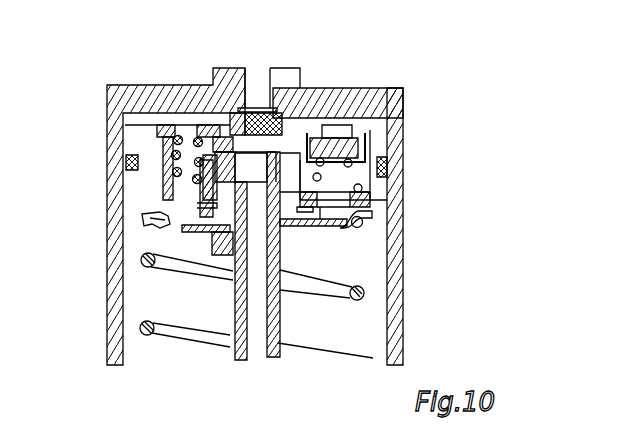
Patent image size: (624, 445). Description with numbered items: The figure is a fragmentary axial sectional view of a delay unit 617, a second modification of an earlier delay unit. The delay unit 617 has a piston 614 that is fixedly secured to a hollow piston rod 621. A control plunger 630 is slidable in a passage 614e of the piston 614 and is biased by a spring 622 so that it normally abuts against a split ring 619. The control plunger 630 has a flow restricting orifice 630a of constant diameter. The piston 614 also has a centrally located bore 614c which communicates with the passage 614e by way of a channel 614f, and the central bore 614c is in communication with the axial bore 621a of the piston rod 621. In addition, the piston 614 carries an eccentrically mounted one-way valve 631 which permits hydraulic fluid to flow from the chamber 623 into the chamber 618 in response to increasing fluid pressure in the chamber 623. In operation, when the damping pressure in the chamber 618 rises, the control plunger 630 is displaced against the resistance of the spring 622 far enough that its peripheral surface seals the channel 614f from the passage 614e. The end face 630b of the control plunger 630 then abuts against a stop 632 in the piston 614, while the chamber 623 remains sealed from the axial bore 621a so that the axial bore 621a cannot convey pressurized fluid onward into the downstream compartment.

The delay unit 617 is at (522, 63).
The piston 614 is at (122, 181).
The central bore 614c is at (270, 167).
The passage 614e is at (178, 133).
The channel 614f is at (276, 122).
The chamber 618 is at (199, 314).
The split ring 619 is at (208, 198).
The hollow piston rod 621 is at (270, 350).
The axial bore 621a is at (258, 268).
The spring 622 is at (142, 152).
The chamber 623 is at (372, 116).
The control plunger 630 is at (182, 185).
The flow restricting orifice 630a is at (173, 223).
The end face 630b is at (200, 138).
The one-way valve 631 is at (347, 143).
The stop 632 is at (208, 150).